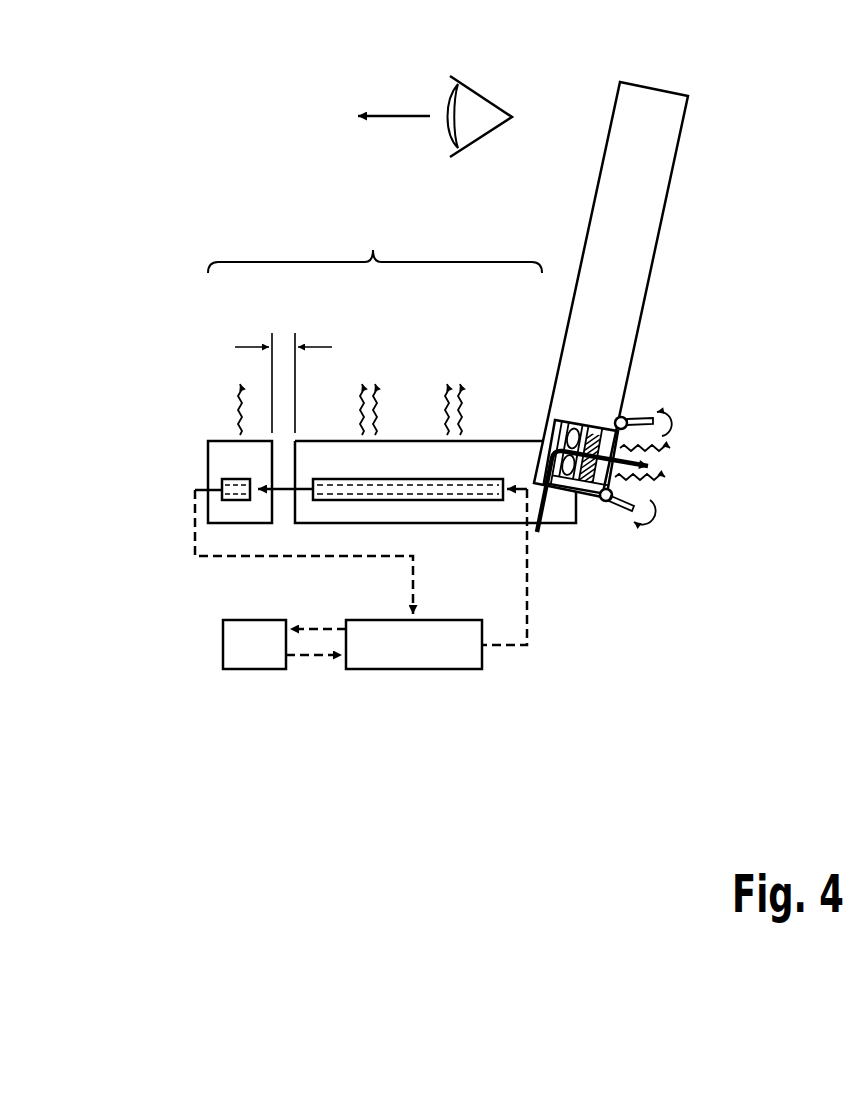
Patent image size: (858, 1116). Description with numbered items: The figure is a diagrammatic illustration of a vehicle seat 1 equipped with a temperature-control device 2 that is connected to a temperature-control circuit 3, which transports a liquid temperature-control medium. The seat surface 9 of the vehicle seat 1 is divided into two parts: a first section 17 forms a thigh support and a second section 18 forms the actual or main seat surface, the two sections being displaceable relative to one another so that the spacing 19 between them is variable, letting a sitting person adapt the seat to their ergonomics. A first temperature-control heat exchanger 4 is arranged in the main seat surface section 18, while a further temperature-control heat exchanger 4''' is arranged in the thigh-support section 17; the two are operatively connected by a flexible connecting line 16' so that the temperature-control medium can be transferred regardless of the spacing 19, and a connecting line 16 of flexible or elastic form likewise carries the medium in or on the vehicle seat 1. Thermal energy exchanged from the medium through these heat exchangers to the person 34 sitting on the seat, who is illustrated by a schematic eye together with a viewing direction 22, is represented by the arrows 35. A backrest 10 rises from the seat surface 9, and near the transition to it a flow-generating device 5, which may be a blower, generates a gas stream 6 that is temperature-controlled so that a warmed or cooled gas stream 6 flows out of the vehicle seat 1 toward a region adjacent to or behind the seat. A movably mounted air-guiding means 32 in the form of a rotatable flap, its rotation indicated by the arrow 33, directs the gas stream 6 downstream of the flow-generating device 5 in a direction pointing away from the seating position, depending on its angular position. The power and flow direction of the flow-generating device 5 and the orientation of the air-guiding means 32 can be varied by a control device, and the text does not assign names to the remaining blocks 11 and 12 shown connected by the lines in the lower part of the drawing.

The vehicle seat 1 is at (120, 168).
The temperature-control device 2 is at (145, 305).
The temperature-control circuit 3 is at (145, 383).
The first temperature-control heat exchanger 4 is at (380, 428).
The temperature-control heat exchanger 4''' is at (187, 472).
The flow-generating device 5 is at (572, 418).
The gas stream 6 is at (548, 512).
The seat surface 9 is at (373, 250).
The backrest 10 is at (658, 167).
The evaluation unit 11 is at (253, 657).
The control unit 12 is at (418, 657).
The connecting line 16 is at (504, 616).
The flexible connecting line 16' is at (304, 552).
The first section 17 is at (217, 452).
The second section 18 is at (323, 453).
The spacing 19 is at (283, 347).
The viewing direction 22 is at (400, 116).
The air-guiding means 32 is at (622, 510).
The arrow indicating rotation 33 is at (650, 512).
The person 34 is at (488, 98).
The arrows illustrating temperature control 35 is at (462, 410).